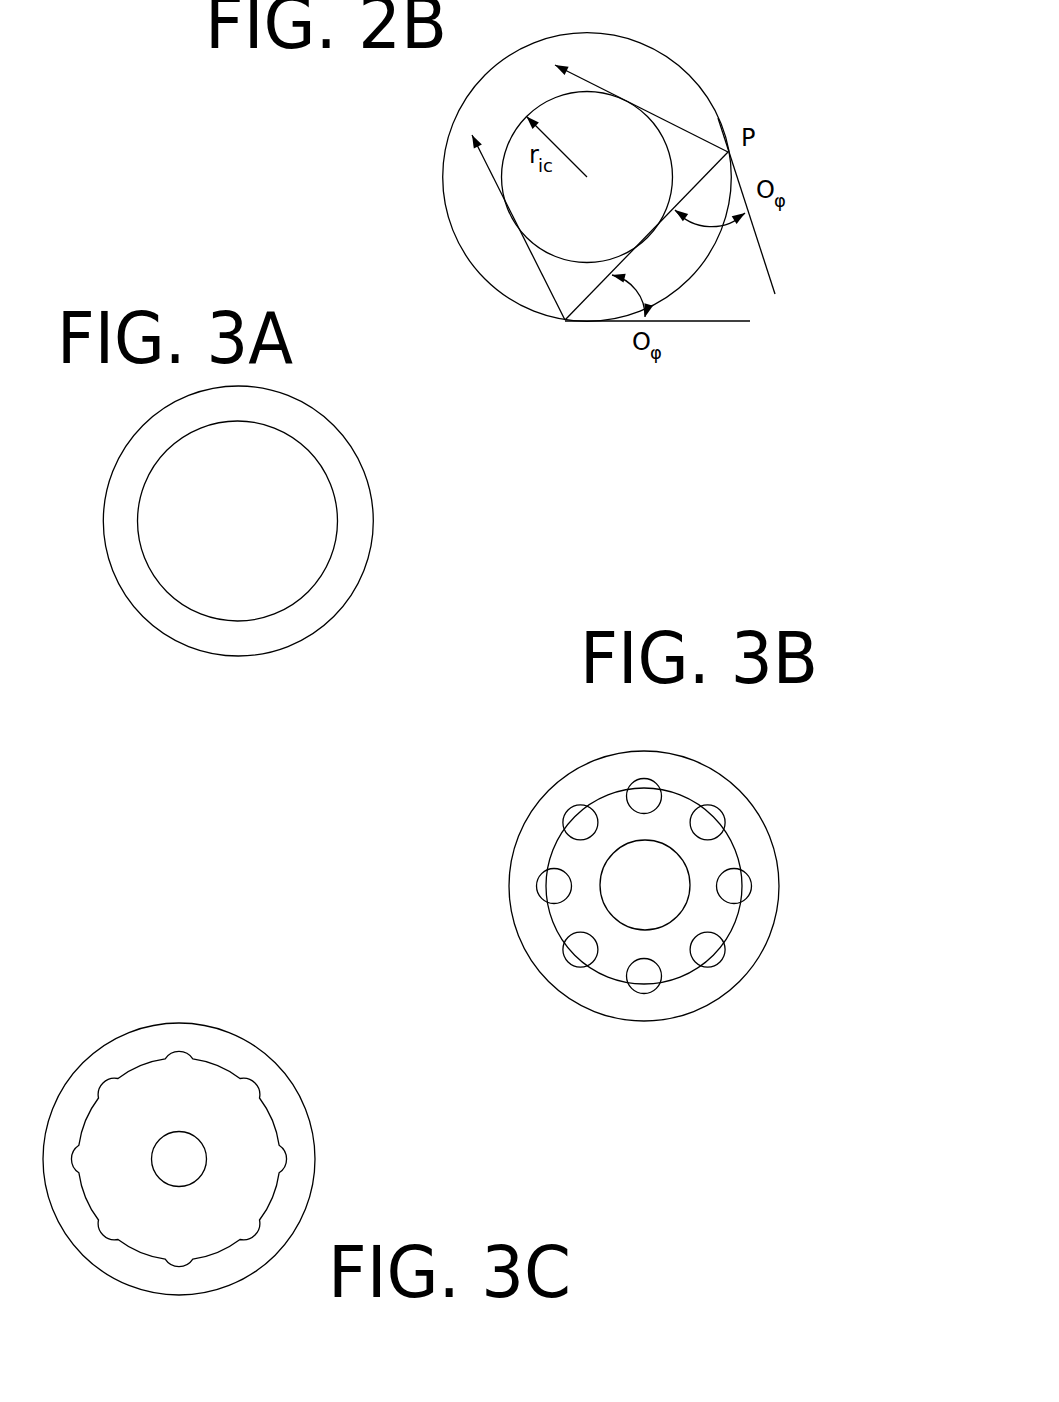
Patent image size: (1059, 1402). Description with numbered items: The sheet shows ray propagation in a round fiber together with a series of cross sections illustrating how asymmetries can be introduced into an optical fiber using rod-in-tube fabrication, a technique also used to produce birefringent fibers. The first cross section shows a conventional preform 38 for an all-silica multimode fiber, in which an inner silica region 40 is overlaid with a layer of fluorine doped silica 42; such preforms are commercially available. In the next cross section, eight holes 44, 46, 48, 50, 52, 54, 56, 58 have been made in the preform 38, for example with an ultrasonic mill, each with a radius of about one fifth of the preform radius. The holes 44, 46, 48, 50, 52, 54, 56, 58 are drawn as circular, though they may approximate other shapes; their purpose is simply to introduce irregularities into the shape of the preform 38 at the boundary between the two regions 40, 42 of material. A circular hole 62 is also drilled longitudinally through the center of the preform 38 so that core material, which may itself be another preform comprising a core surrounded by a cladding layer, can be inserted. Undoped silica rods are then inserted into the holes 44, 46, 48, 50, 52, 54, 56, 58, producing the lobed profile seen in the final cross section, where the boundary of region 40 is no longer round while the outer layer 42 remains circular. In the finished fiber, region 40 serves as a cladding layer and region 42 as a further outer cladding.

In FIG. 3A, the preform 38 is at (63, 419).
In FIG. 3B, the preform 38 is at (852, 729).
In FIG. 3A, the inner silica region 40 is at (273, 473).
In FIG. 3B, the inner silica region 40 is at (668, 822).
In FIG. 3C, the inner silica region 40 is at (197, 1103).
In FIG. 3A, the layer of fluorine doped silica 42 is at (342, 467).
In FIG. 3B, the layer of fluorine doped silica 42 is at (747, 842).
In FIG. 3C, the layer of fluorine doped silica 42 is at (282, 1108).
In FIG. 3B, the hole 44 is at (735, 883).
In FIG. 3B, the hole 46 is at (710, 950).
In FIG. 3B, the hole 48 is at (647, 977).
In FIG. 3B, the hole 50 is at (582, 950).
In FIG. 3B, the hole 52 is at (555, 885).
In FIG. 3B, the hole 54 is at (580, 823).
In FIG. 3B, the hole 56 is at (642, 797).
In FIG. 3B, the hole 58 is at (707, 820).
In FIG. 3B, the circular hole 62 is at (645, 885).